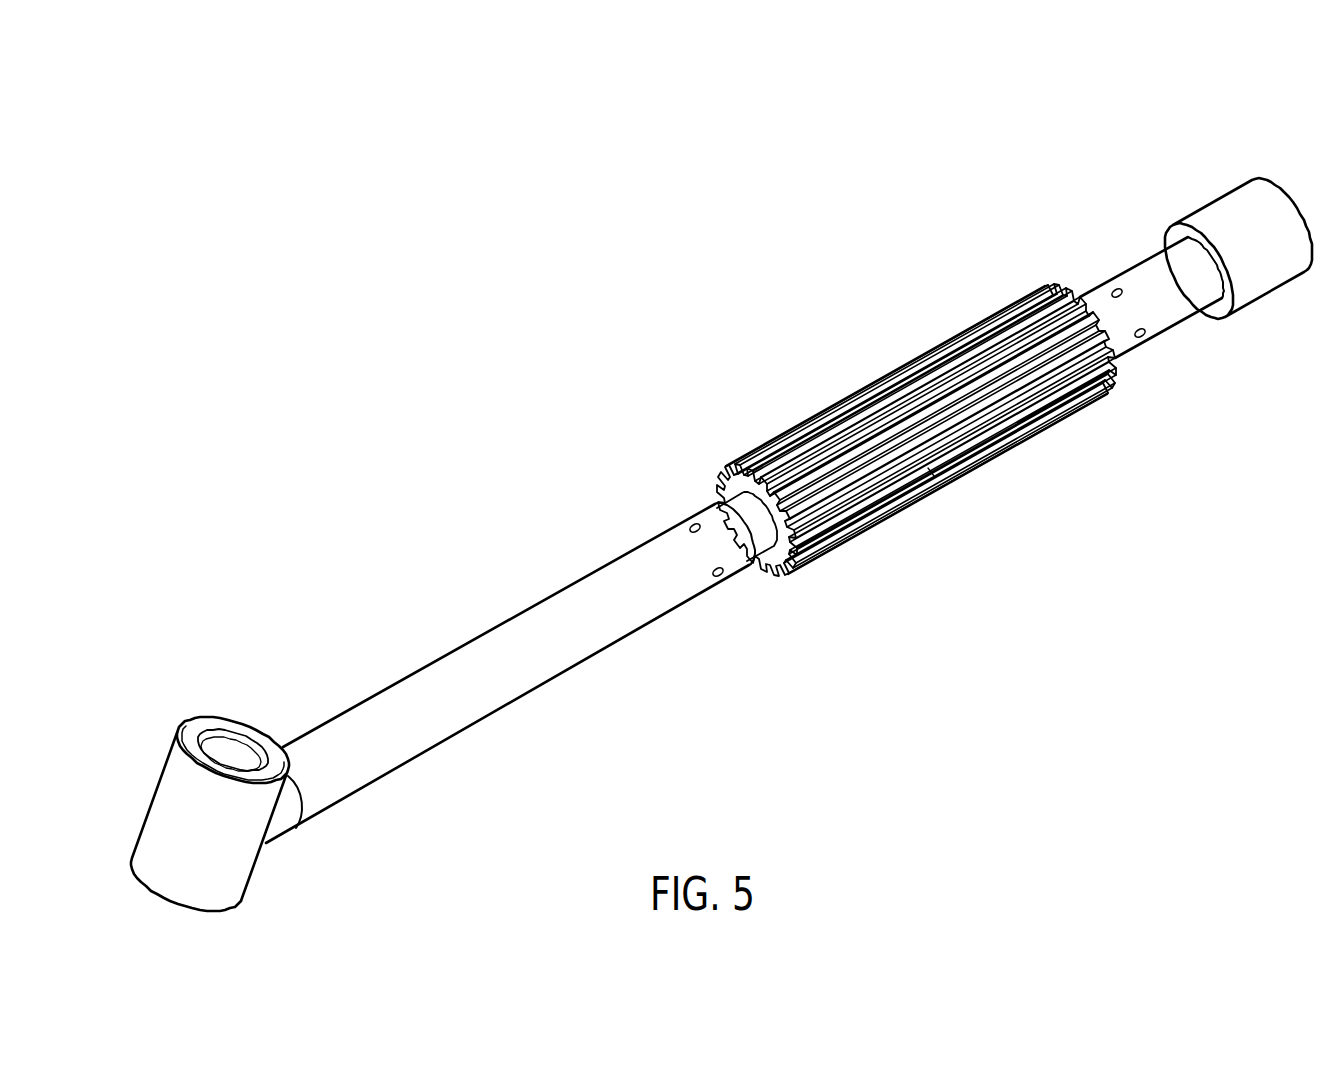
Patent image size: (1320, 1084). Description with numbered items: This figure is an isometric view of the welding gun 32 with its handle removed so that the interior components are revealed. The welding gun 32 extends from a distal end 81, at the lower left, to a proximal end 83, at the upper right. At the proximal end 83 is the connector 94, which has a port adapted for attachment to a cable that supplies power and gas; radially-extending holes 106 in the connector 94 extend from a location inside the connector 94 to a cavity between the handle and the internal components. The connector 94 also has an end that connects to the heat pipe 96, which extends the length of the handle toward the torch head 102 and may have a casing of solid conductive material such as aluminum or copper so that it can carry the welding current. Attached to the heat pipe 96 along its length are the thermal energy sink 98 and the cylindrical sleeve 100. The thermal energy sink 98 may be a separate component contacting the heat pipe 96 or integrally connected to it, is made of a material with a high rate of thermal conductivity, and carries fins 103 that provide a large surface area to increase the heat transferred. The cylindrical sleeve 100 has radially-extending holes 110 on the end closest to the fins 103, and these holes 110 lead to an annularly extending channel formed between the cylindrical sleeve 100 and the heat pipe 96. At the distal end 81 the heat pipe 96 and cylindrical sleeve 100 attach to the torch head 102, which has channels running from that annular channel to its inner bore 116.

The welding gun 32 is at (411, 415).
The distal end 81 is at (166, 640).
The proximal end 83 is at (1230, 150).
The connector 94 is at (1192, 307).
The heat pipe 96 is at (803, 560).
The thermal energy sink 98 is at (940, 473).
The cylindrical sleeve 100 is at (492, 693).
The torch head 102 is at (183, 813).
The fins 103 is at (1067, 403).
The radially-extending holes 106 is at (1141, 337).
The radially-extending holes 110 is at (733, 577).
The inner bore 116 is at (237, 752).